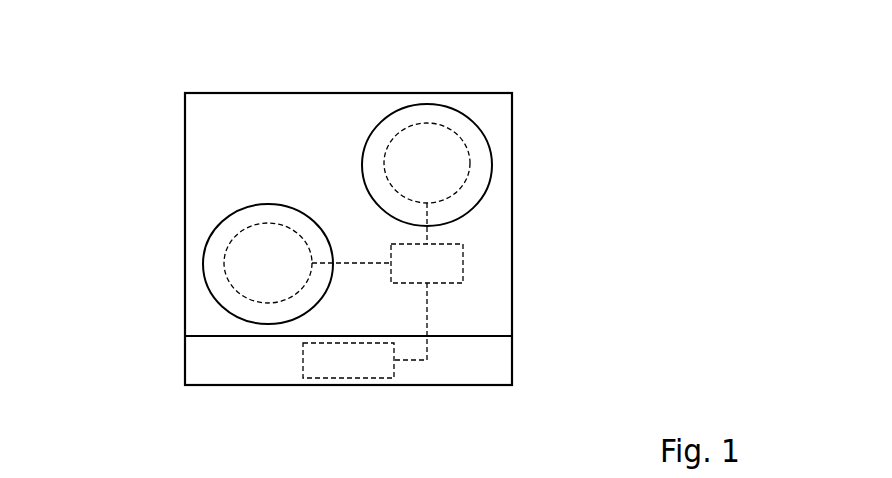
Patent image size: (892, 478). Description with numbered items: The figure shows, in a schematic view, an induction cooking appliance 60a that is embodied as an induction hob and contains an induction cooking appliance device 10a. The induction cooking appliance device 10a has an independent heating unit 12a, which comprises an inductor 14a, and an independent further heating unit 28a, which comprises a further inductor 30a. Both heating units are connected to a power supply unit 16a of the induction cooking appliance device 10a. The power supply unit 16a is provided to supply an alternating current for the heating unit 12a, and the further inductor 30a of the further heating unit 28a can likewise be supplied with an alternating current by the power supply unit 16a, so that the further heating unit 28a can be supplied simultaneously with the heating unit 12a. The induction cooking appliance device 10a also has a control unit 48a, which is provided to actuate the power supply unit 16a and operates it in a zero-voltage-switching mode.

The induction cooking appliance device 10a is at (137, 110).
The induction cooking appliance 60a is at (318, 113).
The heating unit 12a is at (428, 167).
The inductor 14a is at (468, 178).
The power supply unit 16a is at (437, 262).
The further heating unit 28a is at (257, 248).
The further inductor 30a is at (225, 267).
The control unit 48a is at (348, 360).